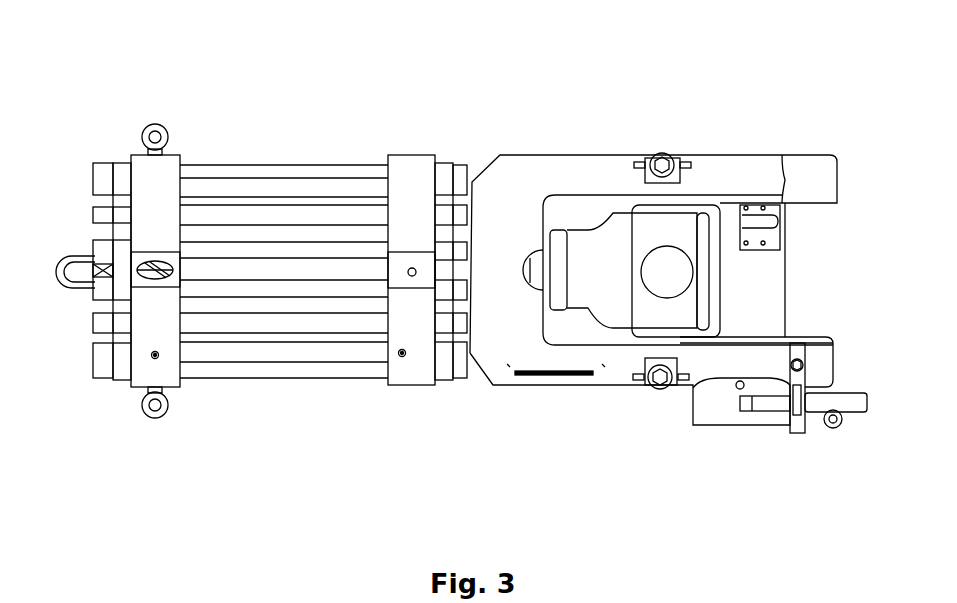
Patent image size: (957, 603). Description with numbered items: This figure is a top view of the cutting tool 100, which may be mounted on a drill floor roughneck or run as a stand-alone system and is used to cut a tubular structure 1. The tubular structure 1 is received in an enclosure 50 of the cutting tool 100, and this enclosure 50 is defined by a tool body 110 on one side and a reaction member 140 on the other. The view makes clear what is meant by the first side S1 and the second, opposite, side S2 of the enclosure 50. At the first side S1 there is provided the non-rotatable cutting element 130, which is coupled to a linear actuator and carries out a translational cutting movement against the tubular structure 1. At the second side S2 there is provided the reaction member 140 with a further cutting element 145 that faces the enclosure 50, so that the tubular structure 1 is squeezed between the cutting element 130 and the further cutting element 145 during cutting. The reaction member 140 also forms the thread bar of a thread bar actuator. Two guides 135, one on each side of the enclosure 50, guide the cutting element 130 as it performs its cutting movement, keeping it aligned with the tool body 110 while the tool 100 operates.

The cutting tool 100 is at (134, 67).
The tool body 110 is at (508, 192).
The cutting element 130 is at (560, 262).
The guides 135 is at (648, 205).
The tubular structure 1 is at (707, 213).
The reaction member 140 is at (667, 272).
The further cutting element 145 is at (703, 286).
The enclosure 50 is at (625, 255).
The first side S1 is at (578, 287).
The second side S2 is at (683, 308).